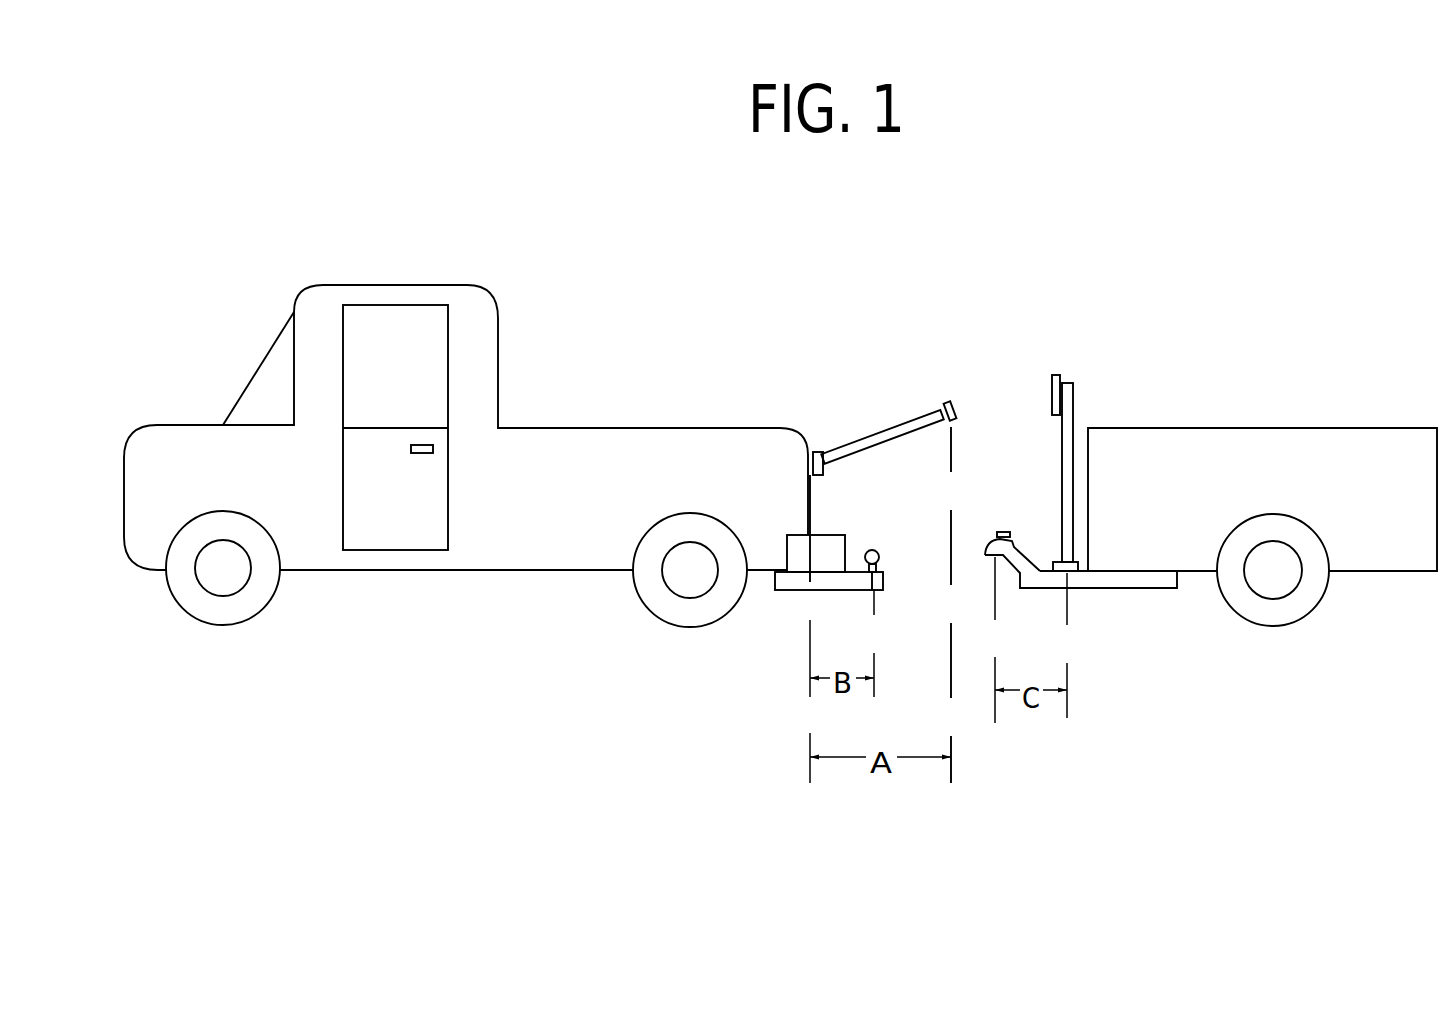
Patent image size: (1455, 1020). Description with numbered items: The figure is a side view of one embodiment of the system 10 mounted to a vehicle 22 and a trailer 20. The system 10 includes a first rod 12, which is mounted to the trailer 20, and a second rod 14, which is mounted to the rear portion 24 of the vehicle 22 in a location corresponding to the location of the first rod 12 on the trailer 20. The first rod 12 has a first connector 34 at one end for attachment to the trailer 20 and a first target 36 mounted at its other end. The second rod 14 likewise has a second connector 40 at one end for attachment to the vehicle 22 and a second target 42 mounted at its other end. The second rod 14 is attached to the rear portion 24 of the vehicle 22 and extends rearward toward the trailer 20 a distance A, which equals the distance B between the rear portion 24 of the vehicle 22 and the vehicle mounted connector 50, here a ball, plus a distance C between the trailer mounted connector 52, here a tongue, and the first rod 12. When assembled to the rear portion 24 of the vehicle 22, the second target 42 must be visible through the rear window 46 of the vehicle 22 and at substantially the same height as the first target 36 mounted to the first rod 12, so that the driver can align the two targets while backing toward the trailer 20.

The system 10 is at (985, 390).
The first rod 12 is at (1238, 525).
The second rod 14 is at (882, 435).
The trailer 20 is at (1415, 555).
The vehicle 22 is at (466, 491).
The rear portion 24 is at (805, 485).
The first connector 34 is at (1068, 567).
The first target 36 is at (1058, 397).
The second connector 40 is at (812, 455).
The second target 42 is at (947, 402).
The rear window 46 is at (502, 353).
The vehicle mounted connector 50 is at (870, 551).
The trailer mounted connector 52 is at (1003, 532).